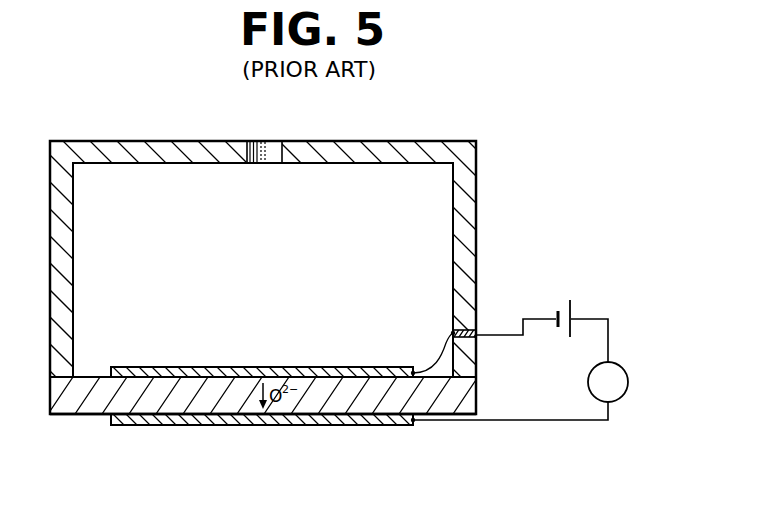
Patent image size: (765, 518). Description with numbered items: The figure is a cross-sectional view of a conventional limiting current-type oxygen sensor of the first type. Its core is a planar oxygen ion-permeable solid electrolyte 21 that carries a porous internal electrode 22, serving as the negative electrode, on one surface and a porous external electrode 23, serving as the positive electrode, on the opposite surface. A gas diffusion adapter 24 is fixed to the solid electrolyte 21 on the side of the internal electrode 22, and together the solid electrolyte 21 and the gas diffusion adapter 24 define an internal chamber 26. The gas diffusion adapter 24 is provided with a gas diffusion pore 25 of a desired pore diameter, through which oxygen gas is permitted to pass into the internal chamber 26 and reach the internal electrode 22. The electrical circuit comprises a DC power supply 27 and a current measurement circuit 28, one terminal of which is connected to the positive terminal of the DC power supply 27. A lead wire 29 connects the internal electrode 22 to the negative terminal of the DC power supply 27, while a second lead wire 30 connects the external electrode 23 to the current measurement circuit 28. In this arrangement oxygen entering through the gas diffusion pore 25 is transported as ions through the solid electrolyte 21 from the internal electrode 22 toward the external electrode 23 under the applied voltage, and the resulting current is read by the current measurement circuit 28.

The solid electrolyte 21 is at (83, 398).
The internal electrode 22 is at (220, 367).
The external electrode 23 is at (195, 426).
The gas diffusion adapter 24 is at (200, 155).
The gas diffusion pore 25 is at (272, 143).
The internal chamber 26 is at (420, 205).
The DC power supply 27 is at (575, 305).
The current measurement circuit 28 is at (630, 382).
The lead wire 29 is at (497, 332).
The lead wire 30 is at (541, 421).